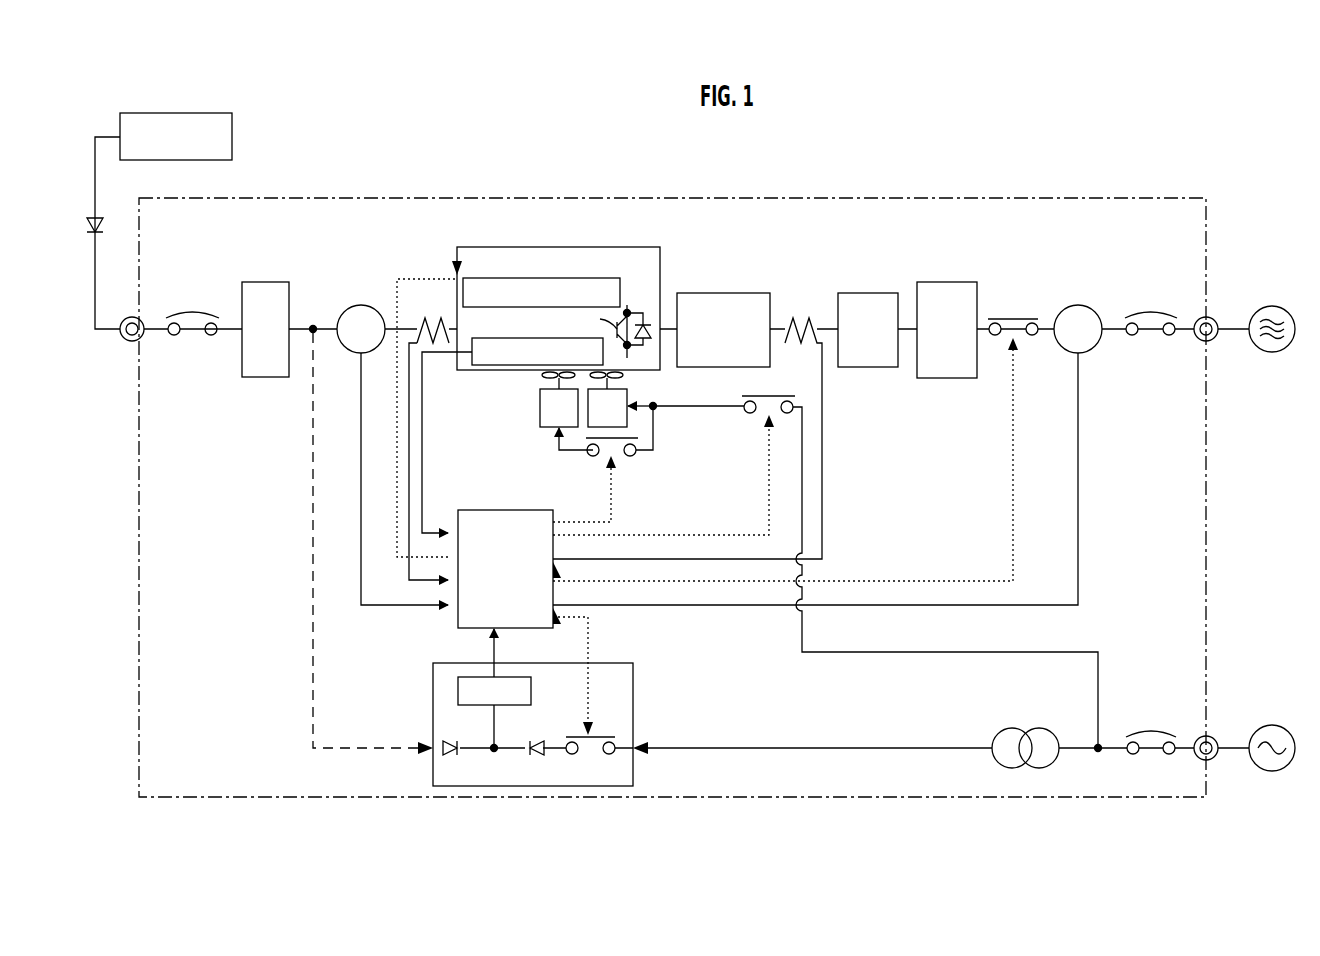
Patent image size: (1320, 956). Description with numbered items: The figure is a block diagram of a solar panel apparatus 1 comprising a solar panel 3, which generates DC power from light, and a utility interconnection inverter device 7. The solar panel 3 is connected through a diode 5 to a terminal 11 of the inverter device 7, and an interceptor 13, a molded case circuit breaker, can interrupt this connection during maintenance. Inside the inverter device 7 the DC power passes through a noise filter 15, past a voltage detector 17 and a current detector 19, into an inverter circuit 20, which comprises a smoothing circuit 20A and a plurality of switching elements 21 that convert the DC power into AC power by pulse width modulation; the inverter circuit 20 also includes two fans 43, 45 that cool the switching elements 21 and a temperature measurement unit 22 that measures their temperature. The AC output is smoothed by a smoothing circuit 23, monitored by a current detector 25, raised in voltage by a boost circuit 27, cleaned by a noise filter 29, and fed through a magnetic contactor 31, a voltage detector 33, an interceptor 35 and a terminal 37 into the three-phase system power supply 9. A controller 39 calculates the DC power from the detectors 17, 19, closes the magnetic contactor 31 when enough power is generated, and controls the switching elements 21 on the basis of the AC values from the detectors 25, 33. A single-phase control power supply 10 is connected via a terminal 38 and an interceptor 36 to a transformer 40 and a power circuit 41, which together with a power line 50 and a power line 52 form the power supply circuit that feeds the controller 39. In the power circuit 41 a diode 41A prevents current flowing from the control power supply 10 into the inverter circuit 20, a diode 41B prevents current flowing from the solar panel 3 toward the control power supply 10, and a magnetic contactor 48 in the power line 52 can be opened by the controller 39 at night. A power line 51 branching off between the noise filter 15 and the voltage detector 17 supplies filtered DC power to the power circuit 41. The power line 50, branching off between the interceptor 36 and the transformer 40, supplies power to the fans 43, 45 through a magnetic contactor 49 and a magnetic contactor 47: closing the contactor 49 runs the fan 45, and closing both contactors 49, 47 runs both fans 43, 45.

The solar panel apparatus 1 is at (672, 463).
The solar panel 3 is at (205, 113).
The diode 5 is at (98, 215).
The utility interconnection inverter device 7 is at (855, 197).
The system power supply 9 is at (1291, 315).
The control power supply 10 is at (1285, 728).
The terminal 11 is at (140, 321).
The interceptor 13 is at (190, 313).
The noise filter 15 is at (275, 282).
The voltage detector 17 is at (352, 305).
The current detector 19 is at (423, 318).
The inverter circuit 20 is at (552, 371).
The smoothing circuit 20A is at (465, 278).
The switching element 21 is at (611, 331).
The temperature measurement unit 22 is at (470, 370).
The smoothing circuit 23 is at (752, 293).
The current detector 25 is at (812, 322).
The boost circuit 27 is at (865, 293).
The noise filter 29 is at (955, 282).
The magnetic contactor 31 is at (1022, 318).
The voltage detector 33 is at (1098, 316).
The interceptor 35 is at (1163, 312).
The interceptor 36 is at (1160, 731).
The terminal 37 is at (1215, 318).
The terminal 38 is at (1215, 738).
The controller 39 is at (505, 510).
The transformer 40 is at (1050, 733).
The power circuit 41 is at (547, 701).
The diode 41A is at (452, 742).
The diode 41B is at (533, 742).
The fan 43 is at (540, 417).
The fan 45 is at (628, 404).
The magnetic contactor 47 is at (632, 458).
The magnetic contactor 48 is at (607, 735).
The magnetic contactor 49 is at (770, 396).
The power line 50 is at (1082, 652).
The power line 51 is at (313, 695).
The power line 52 is at (840, 748).